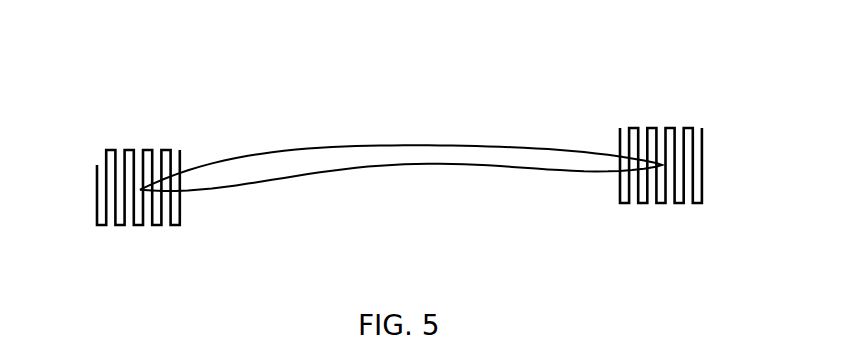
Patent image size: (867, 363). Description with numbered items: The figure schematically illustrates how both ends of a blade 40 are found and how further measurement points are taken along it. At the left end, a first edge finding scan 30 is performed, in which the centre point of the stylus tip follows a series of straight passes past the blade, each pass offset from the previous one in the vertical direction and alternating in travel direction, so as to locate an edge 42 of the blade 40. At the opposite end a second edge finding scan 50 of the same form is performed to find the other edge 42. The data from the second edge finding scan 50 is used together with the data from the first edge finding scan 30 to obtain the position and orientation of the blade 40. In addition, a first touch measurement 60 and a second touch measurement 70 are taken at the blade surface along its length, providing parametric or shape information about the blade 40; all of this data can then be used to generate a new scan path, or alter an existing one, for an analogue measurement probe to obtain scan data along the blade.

The first edge finding scan path 30 is at (95, 176).
The second edge finding scan 50 is at (703, 158).
The blade 40 is at (362, 166).
The first touch measurement 60 is at (362, 143).
The second touch measurement 70 is at (363, 168).
The edge 42 is at (140, 231).